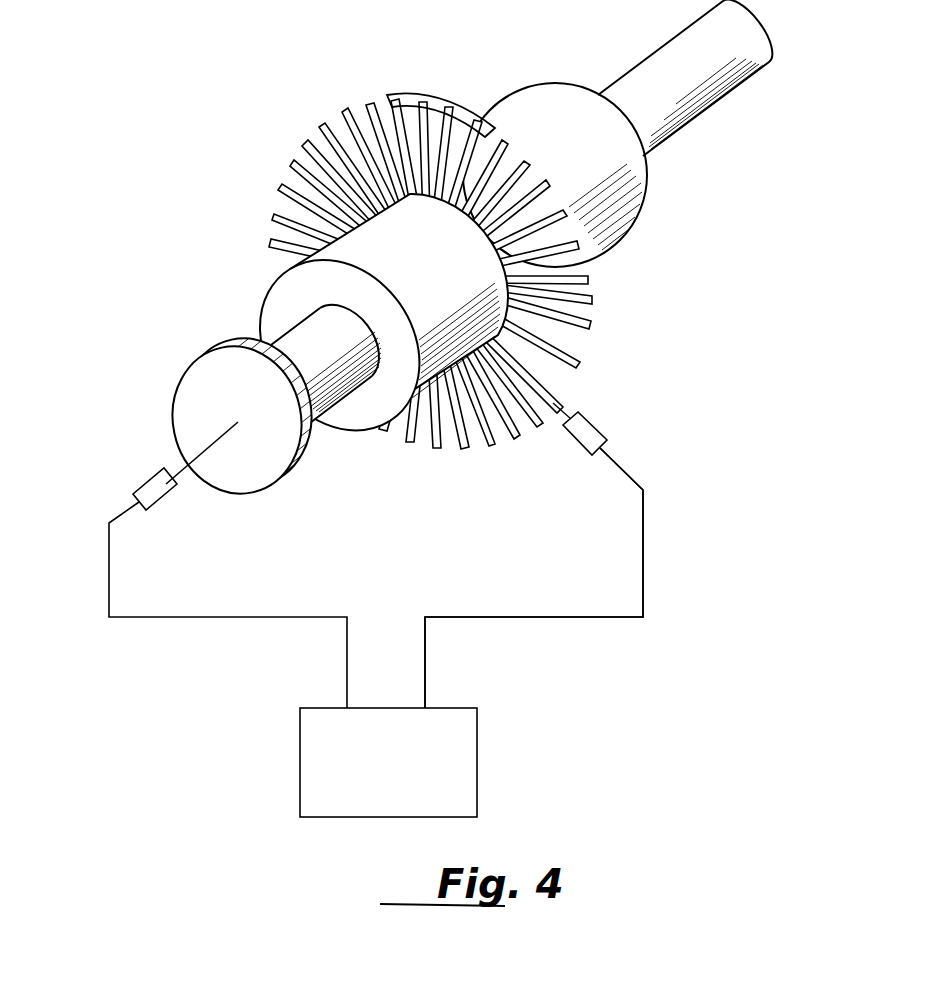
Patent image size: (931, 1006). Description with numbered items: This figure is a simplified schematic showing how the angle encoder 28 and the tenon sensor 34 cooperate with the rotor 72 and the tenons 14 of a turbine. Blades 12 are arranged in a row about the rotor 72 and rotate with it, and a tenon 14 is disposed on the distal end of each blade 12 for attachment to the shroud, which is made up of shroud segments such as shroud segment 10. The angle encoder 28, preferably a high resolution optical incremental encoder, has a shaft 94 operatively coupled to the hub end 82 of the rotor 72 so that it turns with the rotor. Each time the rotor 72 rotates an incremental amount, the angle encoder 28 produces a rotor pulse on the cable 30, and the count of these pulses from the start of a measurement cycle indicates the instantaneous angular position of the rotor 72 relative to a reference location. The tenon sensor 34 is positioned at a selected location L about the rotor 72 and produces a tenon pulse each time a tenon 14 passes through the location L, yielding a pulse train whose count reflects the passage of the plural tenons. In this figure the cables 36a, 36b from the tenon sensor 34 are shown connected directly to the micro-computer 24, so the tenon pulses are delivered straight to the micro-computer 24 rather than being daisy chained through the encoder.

The shroud segment 10 is at (410, 100).
The blade 12 is at (303, 174).
The tenon 14 is at (347, 108).
The micro-computer 24 is at (467, 765).
The angle encoder 28 is at (157, 494).
The cable 30 is at (243, 619).
The tenon sensor 34 is at (585, 443).
The cable 36a is at (643, 573).
The cable 36b is at (534, 578).
The rotor 72 is at (622, 199).
The hub end 82 is at (202, 395).
The shaft 94 is at (667, 62).
The selected location L is at (565, 405).